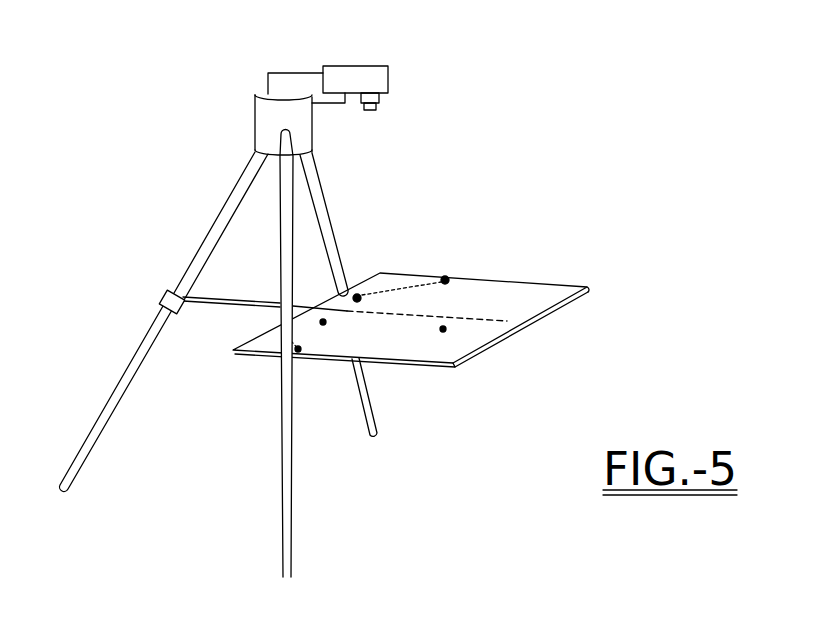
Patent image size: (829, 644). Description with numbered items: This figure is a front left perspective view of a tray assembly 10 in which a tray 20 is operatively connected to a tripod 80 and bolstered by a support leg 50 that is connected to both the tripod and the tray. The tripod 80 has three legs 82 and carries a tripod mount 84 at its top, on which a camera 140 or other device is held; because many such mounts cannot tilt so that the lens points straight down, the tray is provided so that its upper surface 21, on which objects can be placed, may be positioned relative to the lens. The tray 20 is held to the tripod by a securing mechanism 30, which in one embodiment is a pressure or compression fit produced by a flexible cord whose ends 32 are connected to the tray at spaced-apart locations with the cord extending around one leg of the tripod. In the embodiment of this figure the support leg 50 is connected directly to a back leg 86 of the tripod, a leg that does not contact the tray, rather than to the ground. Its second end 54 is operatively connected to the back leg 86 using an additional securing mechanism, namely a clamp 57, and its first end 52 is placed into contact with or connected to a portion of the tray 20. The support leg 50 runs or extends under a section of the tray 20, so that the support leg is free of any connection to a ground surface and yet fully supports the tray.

The tray assembly 10 is at (446, 247).
The tray 20 is at (507, 336).
The upper surface 21 is at (505, 296).
The first end 52 is at (483, 359).
The securing mechanism 30 is at (389, 290).
The end 32 is at (447, 276).
The support leg 50 is at (441, 333).
The tripod 80 is at (241, 175).
The legs 82 is at (332, 228).
The tripod mount 84 is at (292, 72).
The back leg 86 is at (103, 430).
The second end 54 is at (183, 313).
The clamp 57 is at (168, 296).
The camera 140 is at (377, 65).